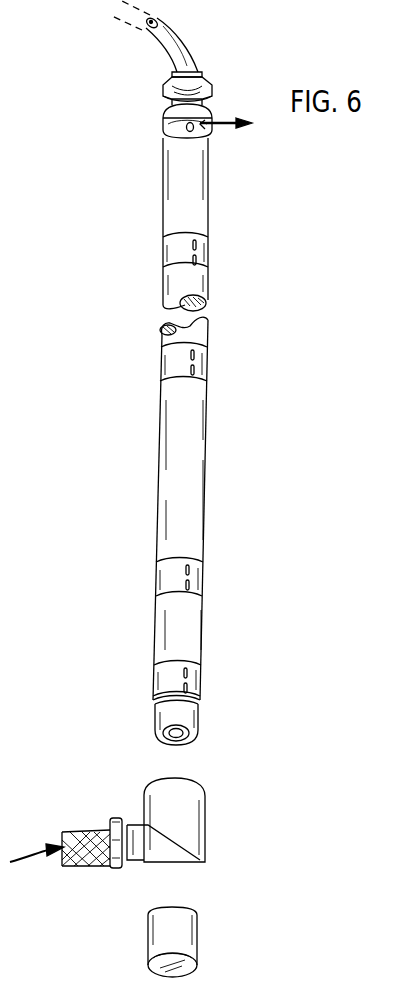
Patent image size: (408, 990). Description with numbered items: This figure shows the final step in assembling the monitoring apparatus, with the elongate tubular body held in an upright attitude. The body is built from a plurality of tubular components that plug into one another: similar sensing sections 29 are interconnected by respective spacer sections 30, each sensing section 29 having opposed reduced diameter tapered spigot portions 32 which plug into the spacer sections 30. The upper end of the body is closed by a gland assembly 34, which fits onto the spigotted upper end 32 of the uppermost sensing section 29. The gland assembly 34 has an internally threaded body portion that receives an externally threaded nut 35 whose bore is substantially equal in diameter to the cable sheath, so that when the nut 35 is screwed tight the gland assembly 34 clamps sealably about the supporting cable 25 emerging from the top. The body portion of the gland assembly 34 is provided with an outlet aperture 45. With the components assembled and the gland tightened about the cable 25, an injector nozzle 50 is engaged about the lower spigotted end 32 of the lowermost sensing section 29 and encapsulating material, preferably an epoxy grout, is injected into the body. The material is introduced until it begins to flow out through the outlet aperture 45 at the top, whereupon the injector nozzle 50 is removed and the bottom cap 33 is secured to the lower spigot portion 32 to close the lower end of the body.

The supporting cable 25 is at (197, 48).
The externally threaded nut 35 is at (213, 78).
The gland assembly 34 is at (160, 130).
The outlet aperture 45 is at (208, 130).
The spacer section 30 is at (195, 208).
The sensing section 29 is at (200, 263).
The spigot portion 32 is at (185, 718).
The injector nozzle 50 is at (197, 822).
The bottom cap 33 is at (180, 944).